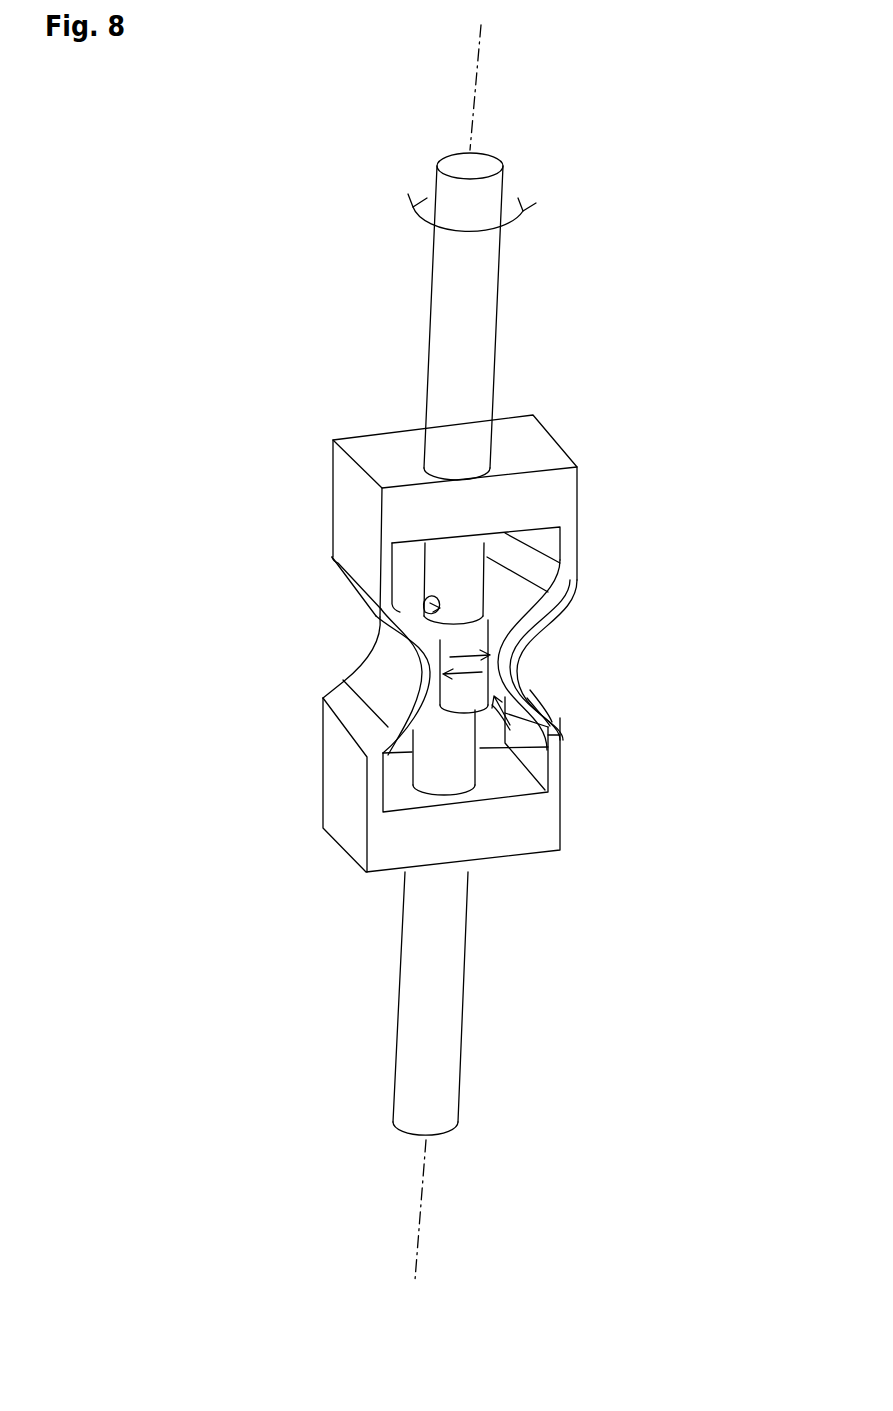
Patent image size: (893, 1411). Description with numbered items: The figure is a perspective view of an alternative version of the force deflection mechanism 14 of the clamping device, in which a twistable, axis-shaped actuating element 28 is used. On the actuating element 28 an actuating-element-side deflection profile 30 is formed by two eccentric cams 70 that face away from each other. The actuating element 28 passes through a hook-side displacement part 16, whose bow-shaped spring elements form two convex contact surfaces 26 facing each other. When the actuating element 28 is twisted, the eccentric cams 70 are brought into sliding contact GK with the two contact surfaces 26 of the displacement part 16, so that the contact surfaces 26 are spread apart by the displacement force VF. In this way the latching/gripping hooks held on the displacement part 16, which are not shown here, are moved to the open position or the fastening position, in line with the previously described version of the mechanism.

The force deflection mechanism 14 is at (662, 380).
The hook-side displacement part 16 is at (300, 462).
The contact surfaces 26 is at (497, 606).
The actuating element 28 is at (470, 318).
The actuating-element-side deflection profile 30 is at (472, 753).
The eccentric cams 70 is at (422, 603).
The sliding contact GK is at (440, 608).
The displacement force VF is at (465, 656).